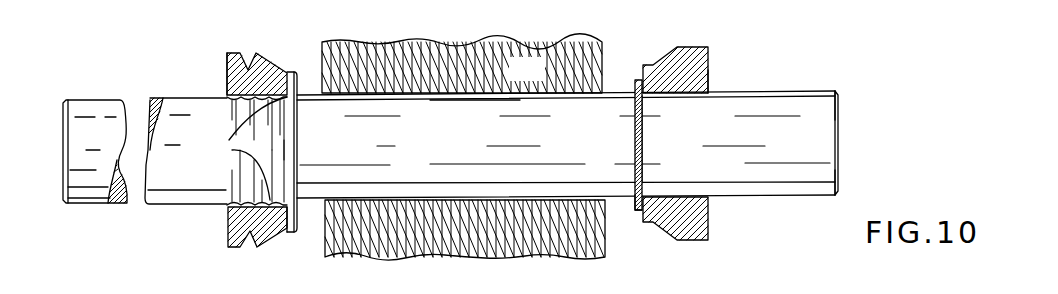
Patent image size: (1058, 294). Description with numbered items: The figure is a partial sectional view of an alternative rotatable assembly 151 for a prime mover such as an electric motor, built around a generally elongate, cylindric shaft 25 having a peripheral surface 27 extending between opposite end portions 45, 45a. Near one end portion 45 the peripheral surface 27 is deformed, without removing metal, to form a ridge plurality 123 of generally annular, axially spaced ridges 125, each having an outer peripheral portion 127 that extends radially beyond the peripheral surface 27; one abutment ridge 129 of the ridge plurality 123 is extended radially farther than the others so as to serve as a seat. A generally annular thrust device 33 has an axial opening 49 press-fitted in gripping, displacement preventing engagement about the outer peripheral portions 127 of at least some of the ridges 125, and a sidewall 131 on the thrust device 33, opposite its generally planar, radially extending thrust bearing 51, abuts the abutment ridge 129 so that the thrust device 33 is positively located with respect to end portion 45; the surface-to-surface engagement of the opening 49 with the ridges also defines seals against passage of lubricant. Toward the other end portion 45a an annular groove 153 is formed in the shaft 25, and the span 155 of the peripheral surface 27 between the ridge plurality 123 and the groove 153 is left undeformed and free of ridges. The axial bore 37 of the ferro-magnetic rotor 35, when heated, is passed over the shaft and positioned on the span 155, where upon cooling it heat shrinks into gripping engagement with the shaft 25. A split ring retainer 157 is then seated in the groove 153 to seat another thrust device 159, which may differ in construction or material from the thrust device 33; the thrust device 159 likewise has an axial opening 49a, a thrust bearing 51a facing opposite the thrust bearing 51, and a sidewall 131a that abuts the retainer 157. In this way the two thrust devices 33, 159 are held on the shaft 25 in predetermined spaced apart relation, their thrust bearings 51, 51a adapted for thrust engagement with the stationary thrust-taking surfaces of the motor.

The shaft 25 is at (830, 140).
The peripheral surface 27 is at (812, 197).
The thrust device 33 is at (251, 57).
The rotor 35 is at (420, 43).
The axial bore 37 is at (545, 88).
The opposite end portion 45 is at (104, 103).
The opposite end portion 45a is at (826, 90).
The axial opening 49 is at (229, 87).
The axial opening 49a is at (708, 88).
The thrust bearing 51 is at (229, 231).
The thrust bearing 51a is at (711, 222).
The ridge plurality 123 is at (222, 192).
The ridge 125 is at (245, 100).
The outer peripheral portion 127 is at (267, 193).
The abutment ridge 129 is at (293, 97).
The sidewall 131 is at (290, 222).
The sidewall 131a is at (638, 213).
The rotatable assembly 151 is at (793, 45).
The annular groove 153 is at (638, 127).
The span 155 is at (477, 100).
The split ring retainer 157 is at (636, 82).
The thrust device 159 is at (678, 50).